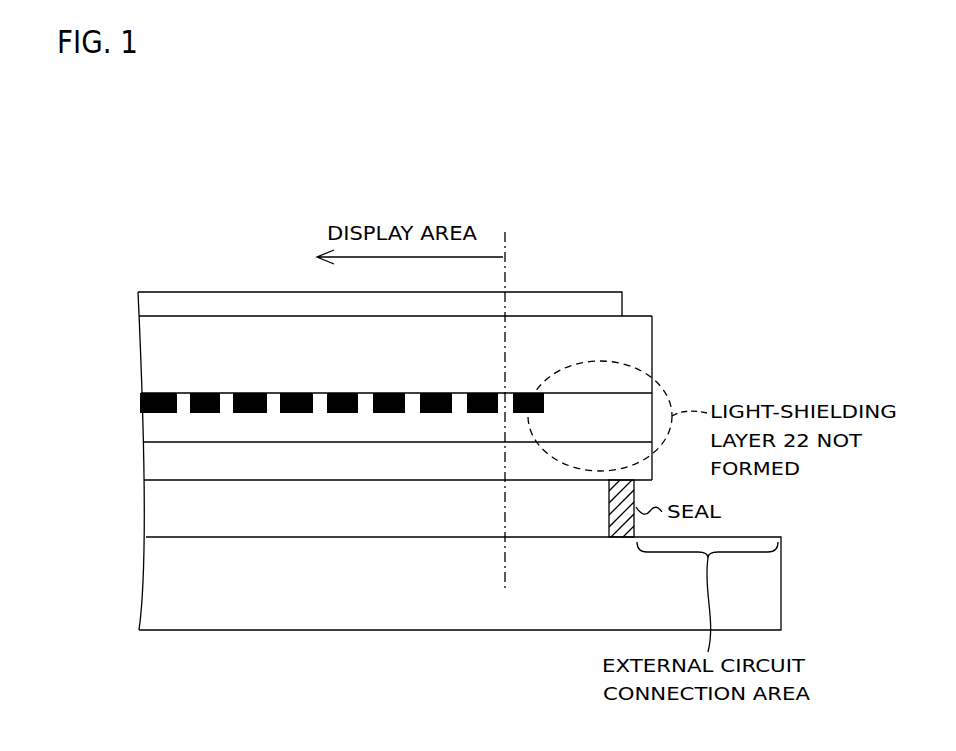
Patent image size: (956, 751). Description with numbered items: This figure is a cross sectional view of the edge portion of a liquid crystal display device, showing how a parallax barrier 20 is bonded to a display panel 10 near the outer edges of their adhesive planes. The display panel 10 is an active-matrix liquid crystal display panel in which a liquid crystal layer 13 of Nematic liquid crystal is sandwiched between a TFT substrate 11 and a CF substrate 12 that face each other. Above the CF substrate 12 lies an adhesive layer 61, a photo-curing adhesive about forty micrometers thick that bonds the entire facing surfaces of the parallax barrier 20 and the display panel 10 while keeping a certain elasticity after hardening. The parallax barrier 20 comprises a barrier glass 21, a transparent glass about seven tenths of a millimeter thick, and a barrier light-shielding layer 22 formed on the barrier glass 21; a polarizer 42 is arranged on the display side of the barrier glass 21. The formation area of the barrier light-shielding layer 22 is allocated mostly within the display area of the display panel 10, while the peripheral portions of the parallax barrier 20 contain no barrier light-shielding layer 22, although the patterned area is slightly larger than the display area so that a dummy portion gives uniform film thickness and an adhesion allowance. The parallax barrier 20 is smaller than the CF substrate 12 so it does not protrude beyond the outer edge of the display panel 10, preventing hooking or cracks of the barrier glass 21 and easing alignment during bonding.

The display panel 10 is at (70, 455).
The TFT substrate 11 is at (147, 582).
The CF substrate 12 is at (147, 469).
The liquid crystal layer 13 is at (147, 514).
The parallax barrier 20 is at (70, 350).
The barrier glass 21 is at (147, 364).
The barrier light-shielding layer 22 is at (147, 402).
The polarizer 42 is at (147, 306).
The adhesive layer 61 is at (147, 434).